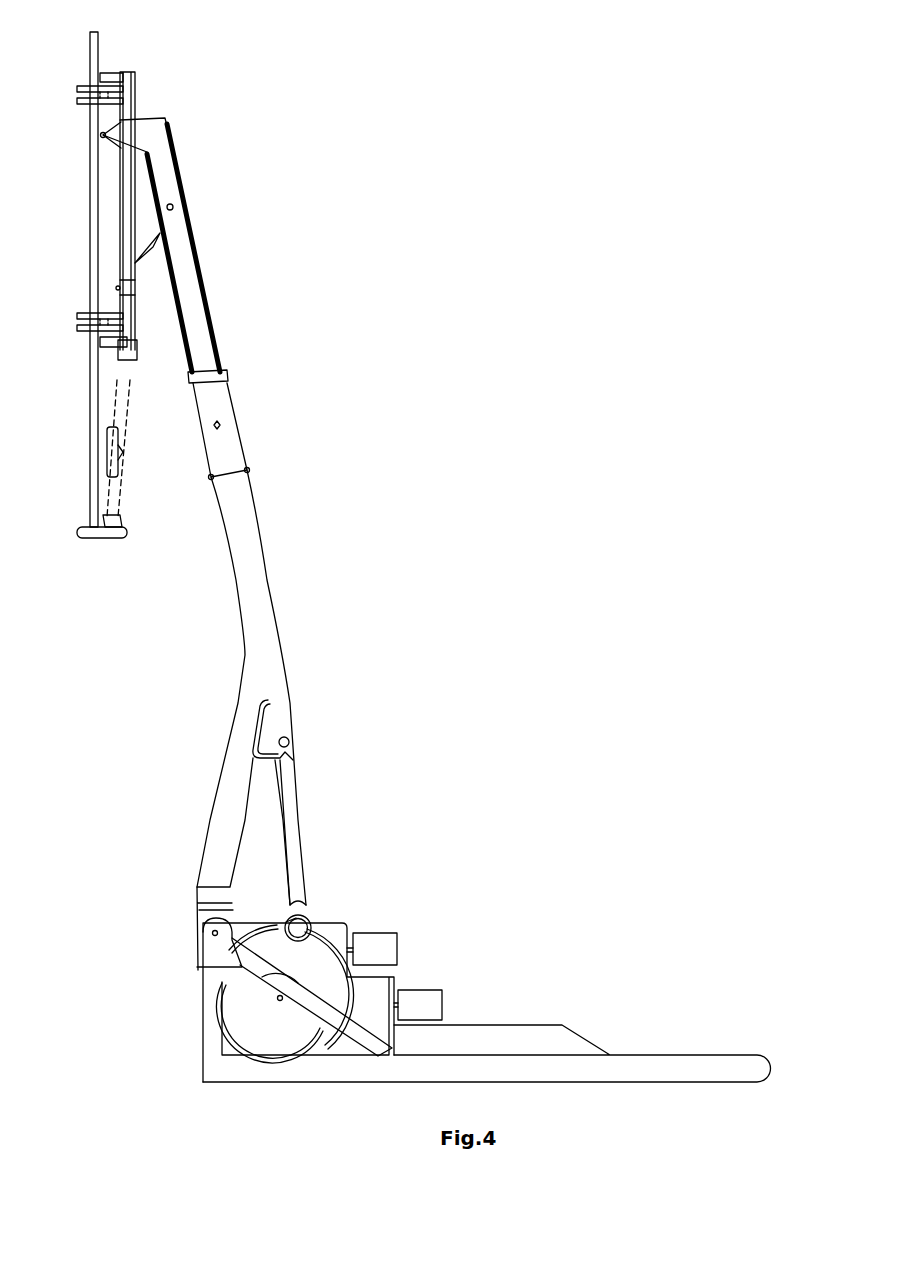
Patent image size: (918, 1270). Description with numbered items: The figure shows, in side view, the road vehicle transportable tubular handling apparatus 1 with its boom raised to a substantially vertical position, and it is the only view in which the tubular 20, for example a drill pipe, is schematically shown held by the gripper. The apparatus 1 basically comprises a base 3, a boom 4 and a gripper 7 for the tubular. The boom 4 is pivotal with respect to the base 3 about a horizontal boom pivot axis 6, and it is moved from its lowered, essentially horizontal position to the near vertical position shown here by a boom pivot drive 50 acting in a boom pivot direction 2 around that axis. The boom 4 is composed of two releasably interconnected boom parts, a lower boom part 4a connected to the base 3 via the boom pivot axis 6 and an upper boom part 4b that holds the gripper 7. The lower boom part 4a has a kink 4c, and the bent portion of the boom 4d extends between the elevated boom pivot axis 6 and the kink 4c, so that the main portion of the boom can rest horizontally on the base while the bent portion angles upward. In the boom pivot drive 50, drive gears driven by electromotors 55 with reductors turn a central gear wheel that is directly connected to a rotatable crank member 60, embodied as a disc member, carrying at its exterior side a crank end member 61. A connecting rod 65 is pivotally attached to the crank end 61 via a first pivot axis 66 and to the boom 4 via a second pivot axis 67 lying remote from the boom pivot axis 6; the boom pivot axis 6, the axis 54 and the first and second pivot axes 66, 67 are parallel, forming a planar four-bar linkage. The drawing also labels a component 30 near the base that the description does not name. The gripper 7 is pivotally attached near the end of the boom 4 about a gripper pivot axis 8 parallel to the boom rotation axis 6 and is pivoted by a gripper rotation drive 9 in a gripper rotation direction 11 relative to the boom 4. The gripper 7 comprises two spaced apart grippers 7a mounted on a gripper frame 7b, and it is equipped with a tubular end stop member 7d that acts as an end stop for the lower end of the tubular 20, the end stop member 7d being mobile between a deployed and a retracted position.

The tubular handling apparatus 1 is at (467, 655).
The boom pivot direction 2 is at (512, 868).
The base 3 is at (688, 1072).
The boom 4 is at (262, 610).
The lower boom part 4a is at (240, 506).
The upper boom part 4b is at (202, 337).
The kink 4c is at (248, 706).
The bent portion of the boom 4d is at (218, 822).
The horizontal boom pivot axis 6 is at (213, 935).
The gripper 7 is at (123, 220).
The grippers 7a is at (85, 88).
The gripper frame 7b is at (125, 287).
The tubular end stop member 7d is at (87, 462).
The gripper pivot axis 8 is at (103, 135).
The gripper rotation drive 9 is at (152, 250).
The gripper rotation direction 11 is at (183, 445).
The tubular 20 is at (97, 50).
The housing 30 is at (335, 930).
The boom pivot drive 50 is at (349, 903).
The axis 54 is at (282, 1000).
The electromotors 55 is at (378, 948).
The crank member 60 is at (291, 987).
The crank end member 61 is at (279, 909).
The connecting rod 65 is at (298, 815).
The first pivot axis 66 is at (306, 917).
The second pivot axis 67 is at (292, 742).